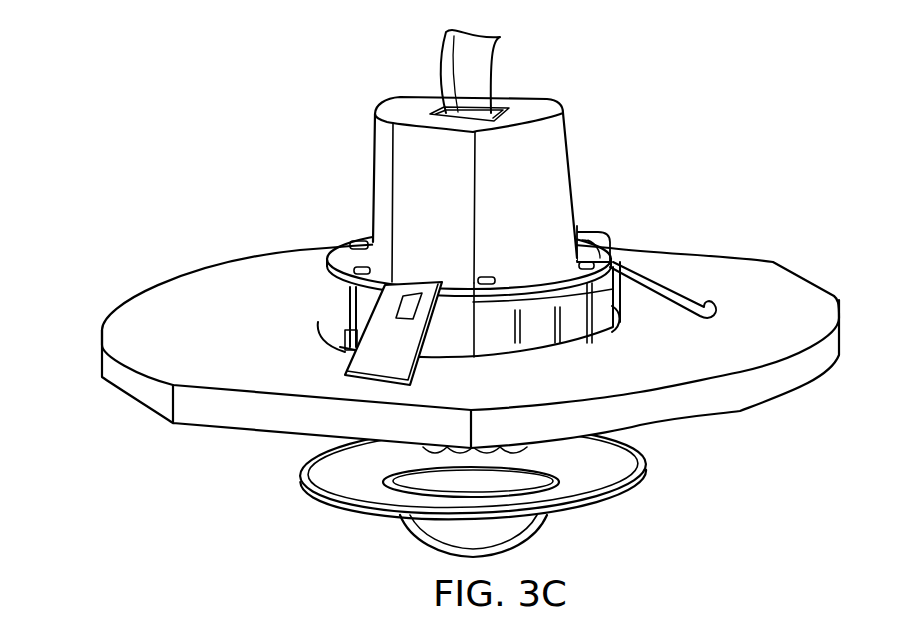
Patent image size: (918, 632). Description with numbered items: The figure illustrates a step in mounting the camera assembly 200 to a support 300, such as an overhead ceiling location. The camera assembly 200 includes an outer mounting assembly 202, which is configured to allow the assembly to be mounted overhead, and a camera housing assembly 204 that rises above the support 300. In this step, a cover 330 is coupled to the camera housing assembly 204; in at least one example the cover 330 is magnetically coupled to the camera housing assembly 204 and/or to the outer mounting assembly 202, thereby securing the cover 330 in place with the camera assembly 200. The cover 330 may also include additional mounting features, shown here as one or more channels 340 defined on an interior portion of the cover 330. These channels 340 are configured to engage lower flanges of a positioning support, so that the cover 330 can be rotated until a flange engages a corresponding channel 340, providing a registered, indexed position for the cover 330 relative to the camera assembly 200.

The camera assembly 200 is at (550, 199).
The outer mounting assembly 202 is at (350, 238).
The camera housing assembly 204 is at (590, 178).
The support 300 is at (97, 398).
The cover 330 is at (287, 495).
The channel 340 is at (578, 470).